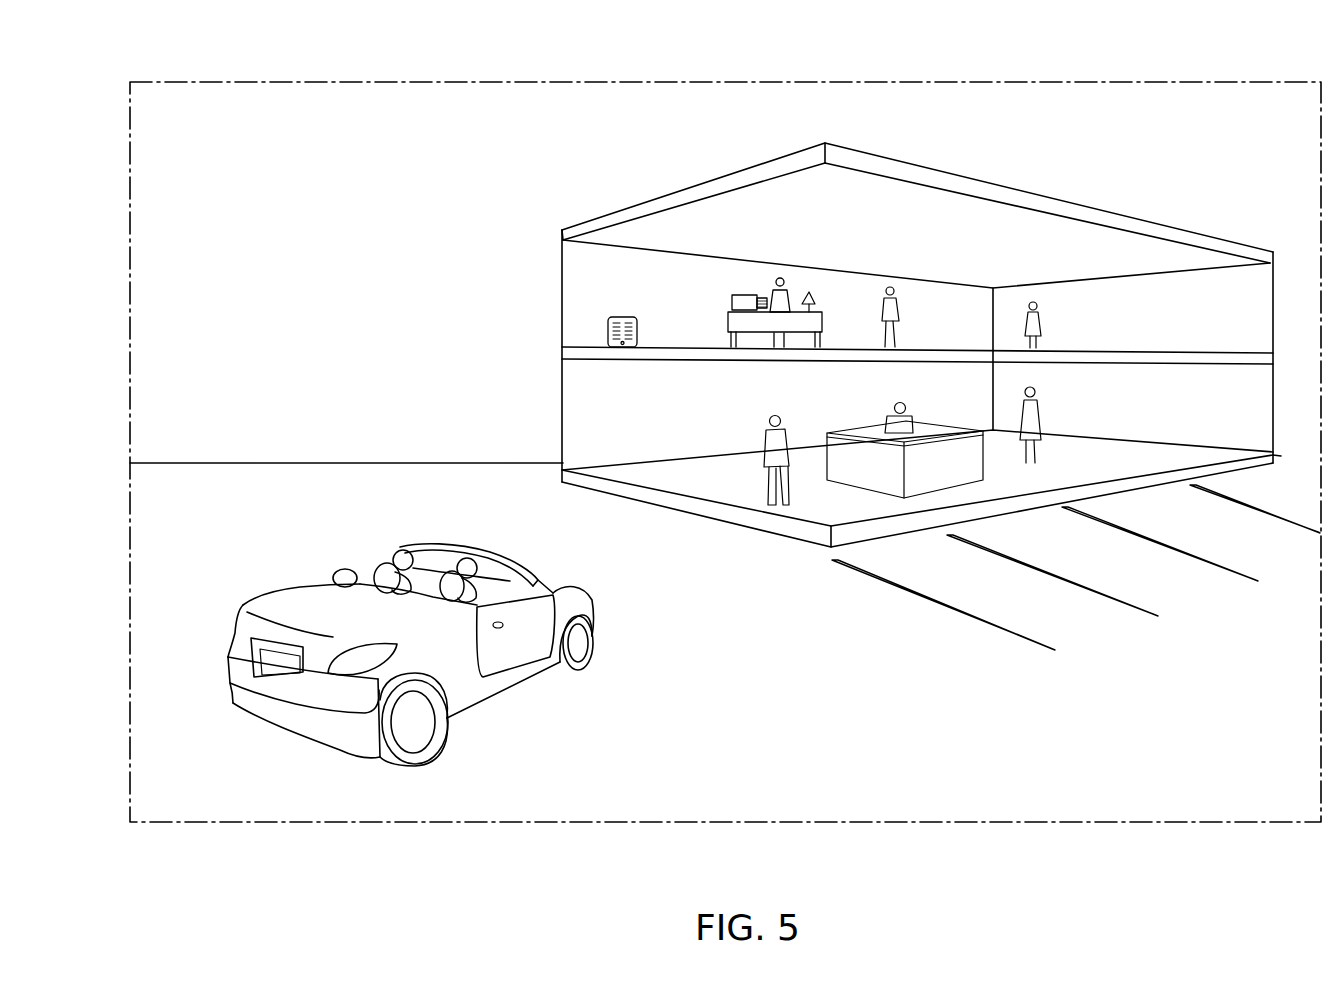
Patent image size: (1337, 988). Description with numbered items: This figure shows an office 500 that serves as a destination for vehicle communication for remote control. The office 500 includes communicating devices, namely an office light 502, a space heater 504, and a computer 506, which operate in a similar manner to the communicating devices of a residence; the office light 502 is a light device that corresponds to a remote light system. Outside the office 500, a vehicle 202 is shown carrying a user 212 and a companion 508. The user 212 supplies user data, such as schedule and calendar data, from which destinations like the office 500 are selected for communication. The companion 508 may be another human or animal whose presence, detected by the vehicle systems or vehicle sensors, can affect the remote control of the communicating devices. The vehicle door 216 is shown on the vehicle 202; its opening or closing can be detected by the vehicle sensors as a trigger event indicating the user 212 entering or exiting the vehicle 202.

The office 500 is at (284, 52).
The office light 502 is at (818, 297).
The space heater 504 is at (621, 316).
The computer 506 is at (745, 294).
The vehicle 202 is at (290, 590).
The user 212 is at (395, 553).
The companion 508 is at (467, 560).
The vehicle door 216 is at (522, 650).